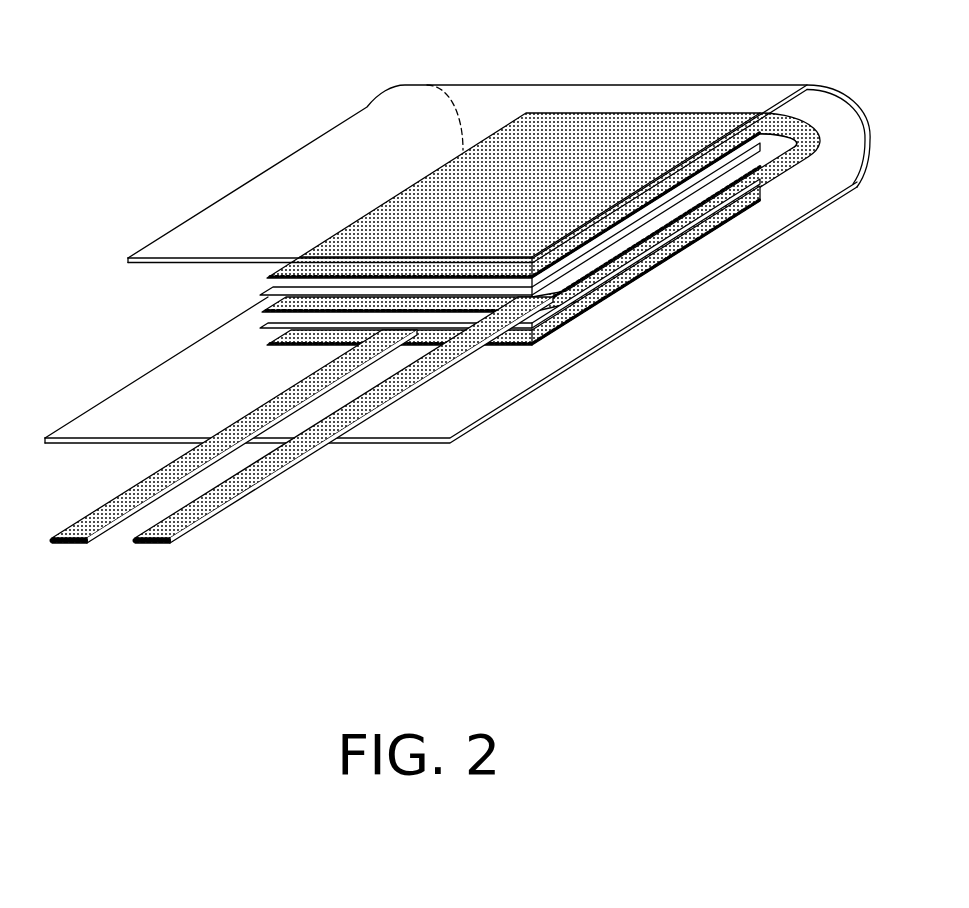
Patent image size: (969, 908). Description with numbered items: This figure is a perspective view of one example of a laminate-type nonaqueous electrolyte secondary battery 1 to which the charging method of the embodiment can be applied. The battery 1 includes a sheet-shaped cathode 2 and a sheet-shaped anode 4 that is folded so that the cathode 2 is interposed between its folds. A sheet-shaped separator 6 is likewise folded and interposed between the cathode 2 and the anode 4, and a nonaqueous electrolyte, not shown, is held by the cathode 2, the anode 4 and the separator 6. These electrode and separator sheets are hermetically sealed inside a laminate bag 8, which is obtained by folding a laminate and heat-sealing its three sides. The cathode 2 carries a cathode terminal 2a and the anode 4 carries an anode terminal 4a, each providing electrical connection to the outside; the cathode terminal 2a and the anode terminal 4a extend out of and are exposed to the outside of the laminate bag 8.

The nonaqueous electrolyte secondary battery 1 is at (455, 32).
The sheet-shaped cathode 2 is at (662, 228).
The cathode terminal 2a is at (163, 545).
The sheet-shaped anode 4 is at (593, 307).
The anode terminal 4a is at (70, 545).
The sheet-shaped separator 6 is at (727, 198).
The laminate bag 8 is at (479, 388).